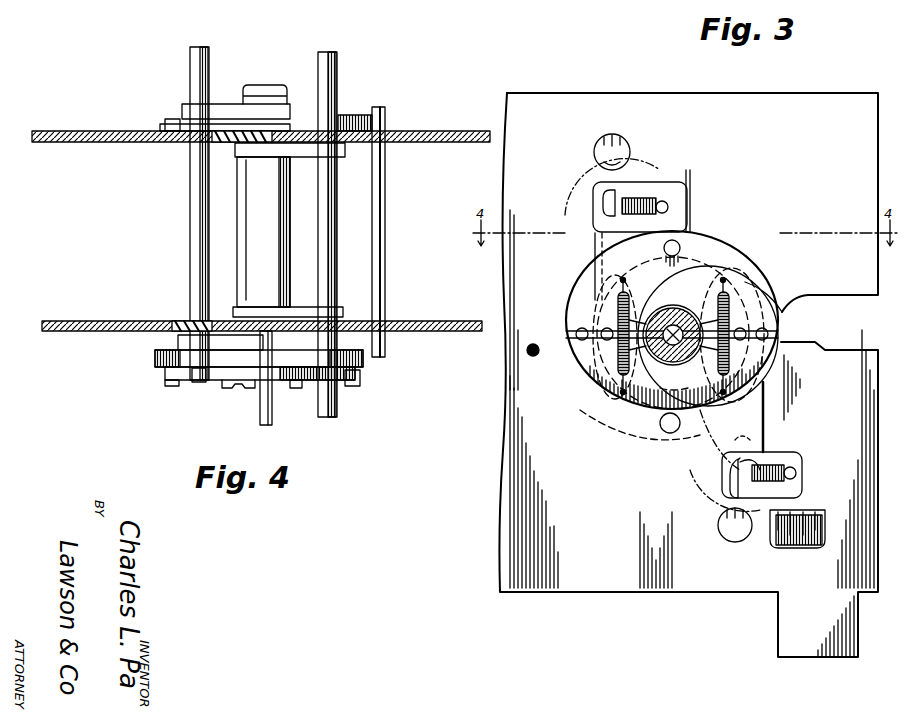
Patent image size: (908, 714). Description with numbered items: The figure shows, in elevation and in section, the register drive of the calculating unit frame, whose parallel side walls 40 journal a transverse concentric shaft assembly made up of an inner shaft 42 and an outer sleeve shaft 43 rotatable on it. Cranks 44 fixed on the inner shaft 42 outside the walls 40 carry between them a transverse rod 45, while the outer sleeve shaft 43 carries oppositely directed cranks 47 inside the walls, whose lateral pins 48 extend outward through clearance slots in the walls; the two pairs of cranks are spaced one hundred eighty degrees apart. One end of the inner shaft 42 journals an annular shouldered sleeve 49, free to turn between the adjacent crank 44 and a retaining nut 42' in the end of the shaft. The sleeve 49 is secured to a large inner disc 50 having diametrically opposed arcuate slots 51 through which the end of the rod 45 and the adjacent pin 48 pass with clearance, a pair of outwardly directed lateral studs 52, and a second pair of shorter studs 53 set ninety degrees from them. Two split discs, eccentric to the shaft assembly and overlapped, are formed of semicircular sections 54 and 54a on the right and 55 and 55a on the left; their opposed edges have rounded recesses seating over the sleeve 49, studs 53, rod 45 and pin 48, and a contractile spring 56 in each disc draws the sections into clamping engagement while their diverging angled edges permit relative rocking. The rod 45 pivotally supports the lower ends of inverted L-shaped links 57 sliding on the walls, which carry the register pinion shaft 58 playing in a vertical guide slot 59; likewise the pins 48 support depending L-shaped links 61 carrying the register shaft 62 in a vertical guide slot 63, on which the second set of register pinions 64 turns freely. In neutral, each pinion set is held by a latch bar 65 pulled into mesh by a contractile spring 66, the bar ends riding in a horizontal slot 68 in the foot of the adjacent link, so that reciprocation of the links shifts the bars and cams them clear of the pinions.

In FIG. 4, the side walls 40 is at (445, 131).
In FIG. 3, the side walls 40 is at (728, 100).
In FIG. 3, the inner shaft 42 is at (673, 345).
In FIG. 4, the retaining nut 42' is at (235, 401).
In FIG. 4, the outer sleeve shaft 43 is at (290, 195).
In FIG. 4, the cranks 44 is at (215, 108).
In FIG. 4, the transverse rod 45 is at (195, 215).
In FIG. 3, the transverse rod 45 is at (612, 345).
In FIG. 4, the cranks 47 is at (345, 150).
In FIG. 4, the pins 48 is at (337, 72).
In FIG. 3, the pins 48 is at (781, 344).
In FIG. 4, the annular shouldered sleeve 49 is at (298, 388).
In FIG. 3, the annular shouldered sleeve 49 is at (675, 305).
In FIG. 4, the inner disc 50 is at (155, 357).
In FIG. 3, the inner disc 50 is at (745, 272).
In FIG. 3, the arcuate slots 51 is at (733, 264).
In FIG. 4, the lateral studs 52 is at (262, 420).
In FIG. 3, the lateral studs 52 is at (681, 245).
In FIG. 4, the studs 53 is at (172, 386).
In FIG. 3, the studs 53 is at (580, 340).
In FIG. 3, the split disc section 54 is at (790, 292).
In FIG. 3, the split disc section 54a is at (700, 430).
In FIG. 3, the split disc section 55 is at (580, 314).
In FIG. 3, the split disc section 55a is at (640, 395).
In FIG. 3, the contractile spring 56 is at (596, 400).
In FIG. 4, the inverted L-shaped links 57 is at (205, 140).
In FIG. 3, the inverted L-shaped links 57 is at (613, 253).
In FIG. 3, the register pinion shaft 58 is at (603, 206).
In FIG. 3, the vertical guide slot 59 is at (590, 242).
In FIG. 3, the depending L-shaped links 61 is at (768, 408).
In FIG. 3, the register shaft 62 is at (762, 462).
In FIG. 3, the vertical guide slot 63 is at (760, 436).
In FIG. 3, the register pinions 64 is at (718, 512).
In FIG. 4, the latch bar 65 is at (385, 224).
In FIG. 3, the latch bar 65 is at (690, 196).
In FIG. 3, the contractile spring 66 is at (638, 200).
In FIG. 3, the horizontal slot 68 is at (668, 206).